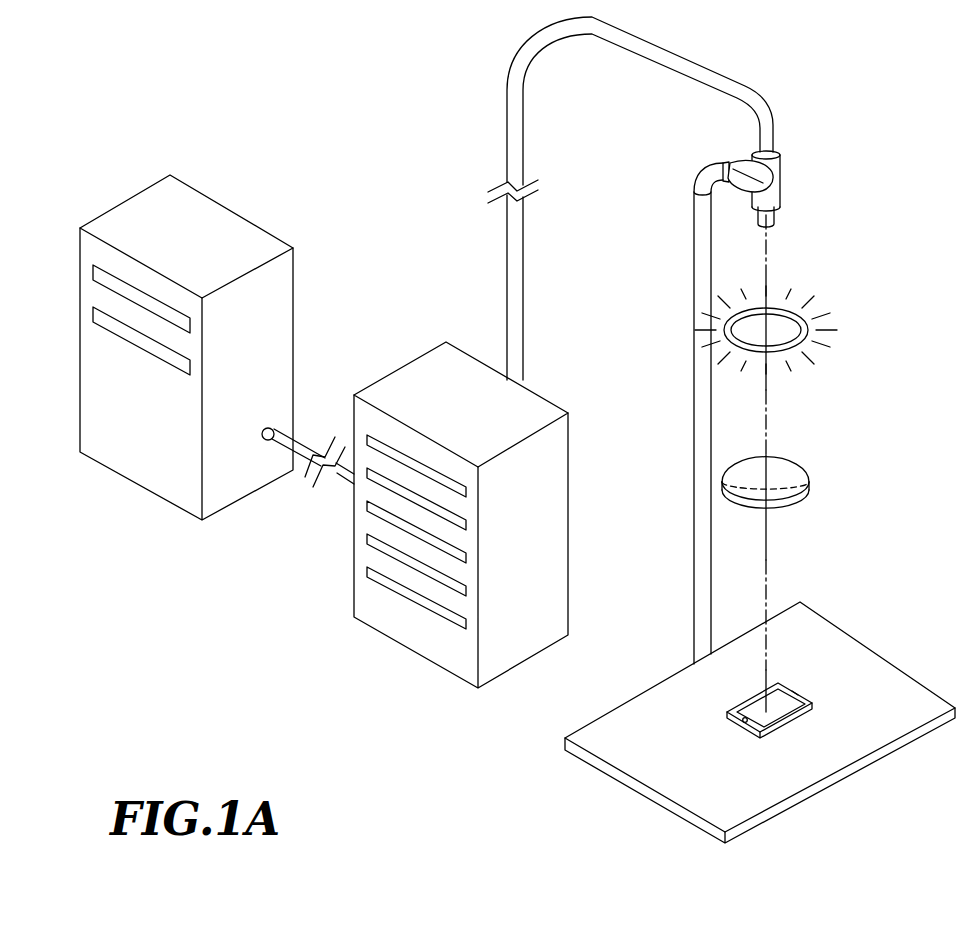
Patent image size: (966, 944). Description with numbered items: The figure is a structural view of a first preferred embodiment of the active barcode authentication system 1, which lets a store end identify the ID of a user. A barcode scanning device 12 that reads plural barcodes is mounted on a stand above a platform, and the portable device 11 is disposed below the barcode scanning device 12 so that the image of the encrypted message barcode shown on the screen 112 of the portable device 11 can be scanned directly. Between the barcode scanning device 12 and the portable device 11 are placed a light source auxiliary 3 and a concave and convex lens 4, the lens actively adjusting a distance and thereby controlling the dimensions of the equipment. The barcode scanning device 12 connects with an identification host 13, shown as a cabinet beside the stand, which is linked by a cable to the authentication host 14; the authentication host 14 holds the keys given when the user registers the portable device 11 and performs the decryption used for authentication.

The active barcode authentication system 1 is at (833, 78).
The light source auxiliary 3 is at (804, 311).
The concave and convex lens 4 is at (806, 468).
The portable device 11 is at (746, 704).
The barcode scanning device 12 is at (781, 156).
The identification host 13 is at (531, 389).
The authentication host 14 is at (256, 223).
The screen 112 is at (782, 687).